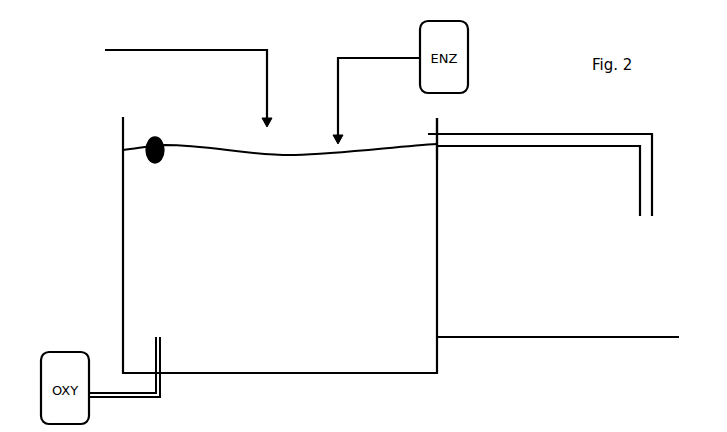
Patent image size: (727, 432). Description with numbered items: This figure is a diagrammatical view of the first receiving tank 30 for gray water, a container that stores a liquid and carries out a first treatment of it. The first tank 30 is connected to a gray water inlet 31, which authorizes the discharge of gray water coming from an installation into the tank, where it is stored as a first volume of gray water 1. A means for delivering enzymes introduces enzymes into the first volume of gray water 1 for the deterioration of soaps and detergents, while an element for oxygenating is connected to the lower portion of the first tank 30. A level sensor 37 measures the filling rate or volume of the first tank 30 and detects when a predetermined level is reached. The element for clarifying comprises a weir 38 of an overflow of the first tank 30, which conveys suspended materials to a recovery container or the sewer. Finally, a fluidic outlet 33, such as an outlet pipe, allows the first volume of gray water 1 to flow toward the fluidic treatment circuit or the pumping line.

The first volume of gray water 1 is at (195, 292).
The first receiving tank 30 is at (121, 175).
The gray water inlet 31 is at (196, 48).
The fluidic outlet 33 is at (538, 340).
The level sensor 37 is at (154, 137).
The weir 38 is at (510, 148).